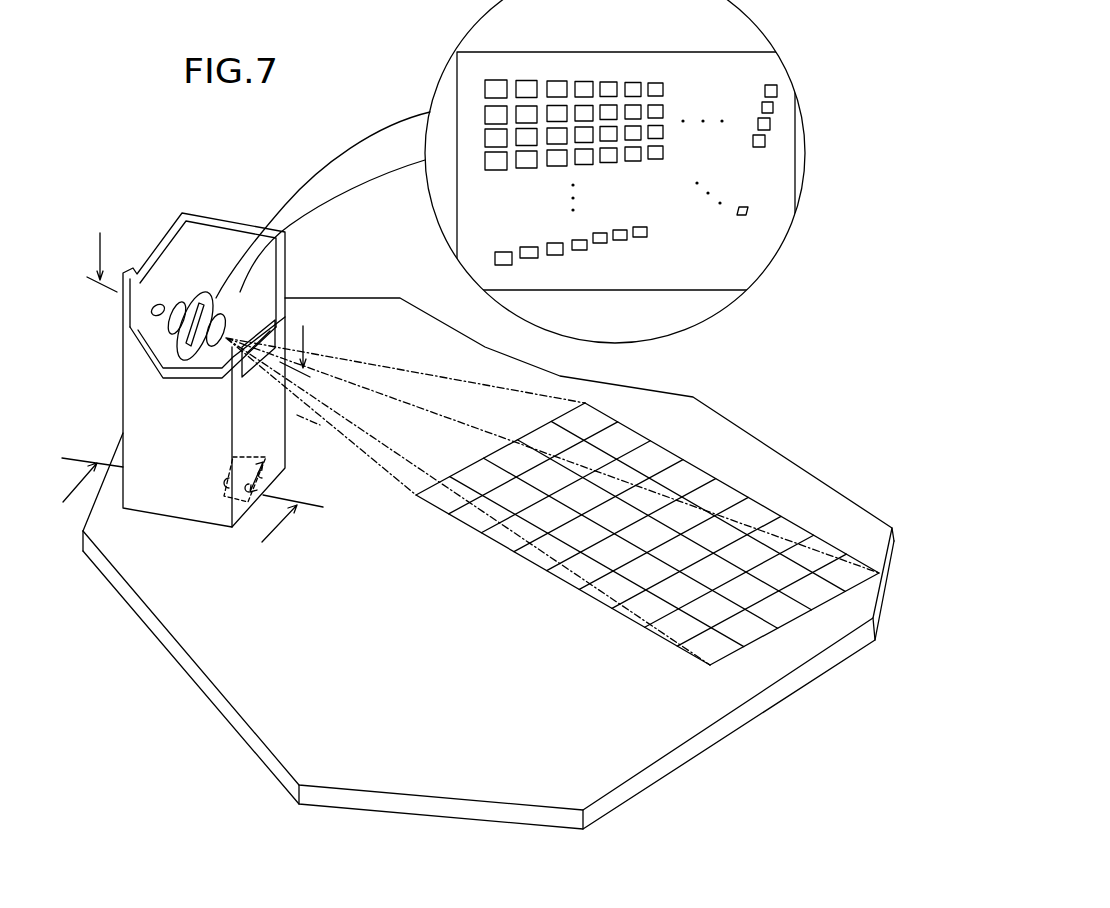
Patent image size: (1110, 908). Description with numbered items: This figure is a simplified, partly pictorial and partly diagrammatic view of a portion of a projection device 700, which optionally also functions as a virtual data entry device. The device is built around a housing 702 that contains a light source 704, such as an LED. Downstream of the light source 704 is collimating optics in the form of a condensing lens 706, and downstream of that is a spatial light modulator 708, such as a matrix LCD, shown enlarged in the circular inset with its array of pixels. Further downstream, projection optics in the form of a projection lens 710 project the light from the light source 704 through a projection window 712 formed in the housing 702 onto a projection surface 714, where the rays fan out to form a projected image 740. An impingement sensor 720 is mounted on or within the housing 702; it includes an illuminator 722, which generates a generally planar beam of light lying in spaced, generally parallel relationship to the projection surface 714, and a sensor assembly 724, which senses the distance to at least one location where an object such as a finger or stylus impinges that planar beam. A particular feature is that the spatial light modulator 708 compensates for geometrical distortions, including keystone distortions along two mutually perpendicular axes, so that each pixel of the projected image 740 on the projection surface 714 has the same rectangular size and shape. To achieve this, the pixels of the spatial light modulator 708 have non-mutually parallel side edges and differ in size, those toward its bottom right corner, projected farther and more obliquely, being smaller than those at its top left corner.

The projection device 700 is at (88, 174).
The housing 702 is at (122, 397).
The light source 704 is at (157, 303).
The condensing lens 706 is at (176, 303).
The spatial light modulator 708 is at (160, 360).
The projection lens 710 is at (226, 313).
The projection window 712 is at (268, 322).
The projection surface 714 is at (197, 644).
The impingement sensor 720 is at (235, 458).
The illuminator 722 is at (270, 477).
The sensor assembly 724 is at (233, 483).
The projected image 740 is at (623, 465).